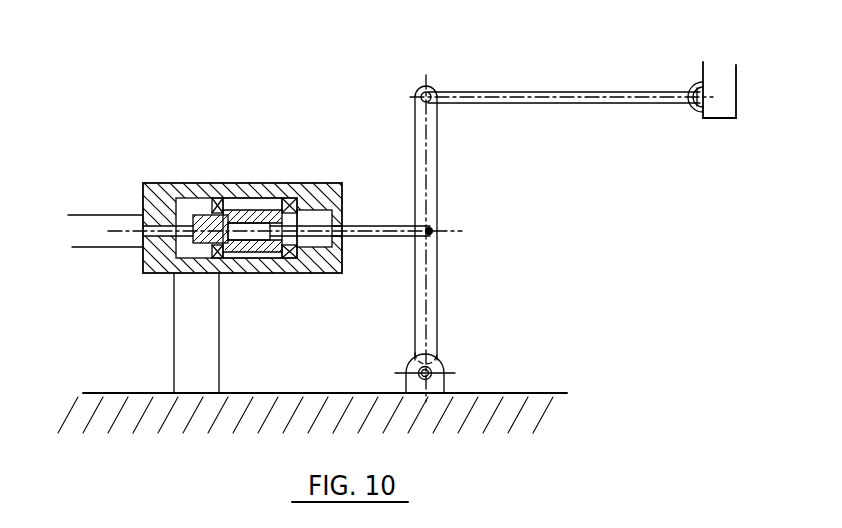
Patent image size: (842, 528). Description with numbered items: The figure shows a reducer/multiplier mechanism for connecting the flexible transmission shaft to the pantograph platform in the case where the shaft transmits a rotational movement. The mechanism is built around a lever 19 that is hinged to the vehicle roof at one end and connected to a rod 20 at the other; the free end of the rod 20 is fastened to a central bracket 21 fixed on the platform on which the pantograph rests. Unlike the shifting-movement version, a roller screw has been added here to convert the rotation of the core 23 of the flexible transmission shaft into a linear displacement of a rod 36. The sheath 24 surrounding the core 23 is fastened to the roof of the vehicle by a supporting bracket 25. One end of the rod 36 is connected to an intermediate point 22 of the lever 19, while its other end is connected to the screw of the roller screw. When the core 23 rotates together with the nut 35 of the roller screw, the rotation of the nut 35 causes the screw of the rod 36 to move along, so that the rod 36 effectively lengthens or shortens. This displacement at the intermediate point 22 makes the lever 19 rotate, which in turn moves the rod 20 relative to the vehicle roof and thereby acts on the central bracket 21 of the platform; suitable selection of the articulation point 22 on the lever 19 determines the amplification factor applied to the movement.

The lever 19 is at (438, 160).
The rod 20 is at (537, 92).
The central bracket 21 is at (717, 120).
The intermediate point 22 is at (432, 233).
The core 23 is at (181, 228).
The sheath 24 is at (100, 214).
The supporting bracket 25 is at (173, 323).
The nut 35 is at (254, 210).
The rod 36 is at (371, 228).